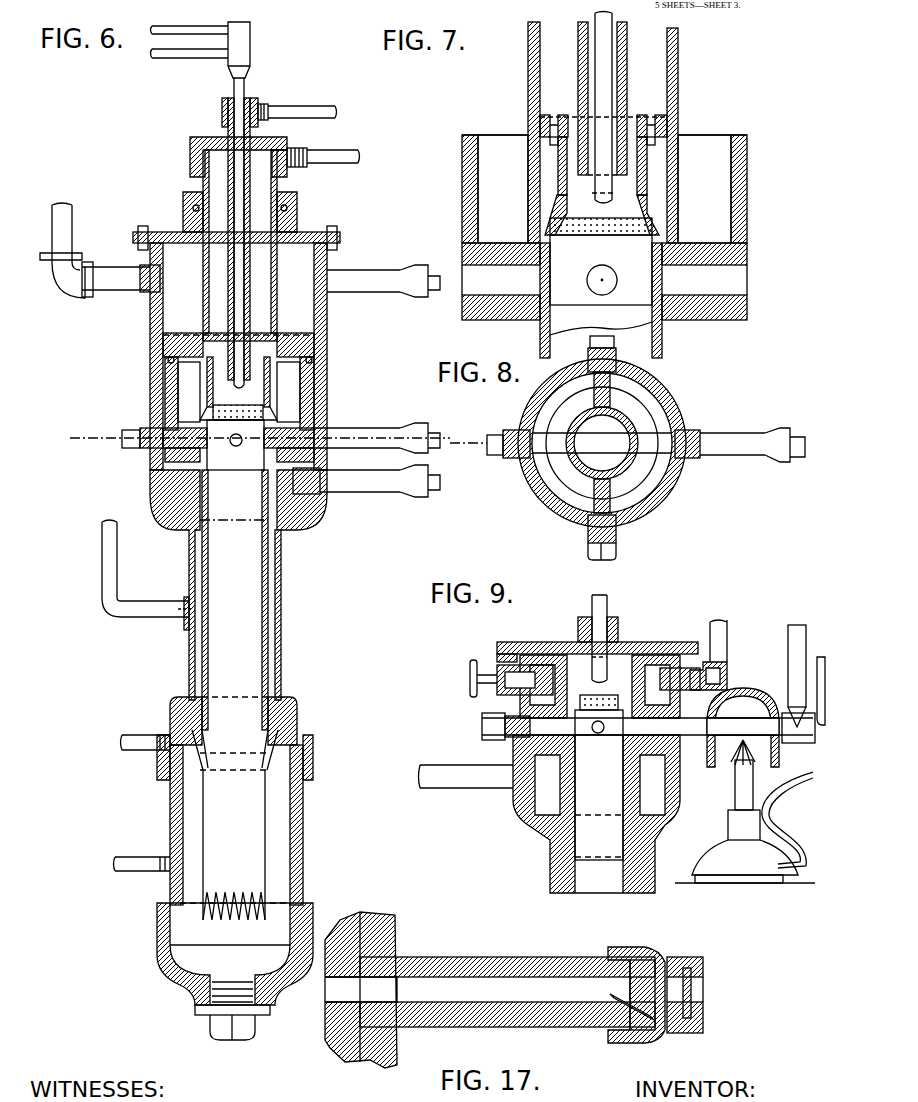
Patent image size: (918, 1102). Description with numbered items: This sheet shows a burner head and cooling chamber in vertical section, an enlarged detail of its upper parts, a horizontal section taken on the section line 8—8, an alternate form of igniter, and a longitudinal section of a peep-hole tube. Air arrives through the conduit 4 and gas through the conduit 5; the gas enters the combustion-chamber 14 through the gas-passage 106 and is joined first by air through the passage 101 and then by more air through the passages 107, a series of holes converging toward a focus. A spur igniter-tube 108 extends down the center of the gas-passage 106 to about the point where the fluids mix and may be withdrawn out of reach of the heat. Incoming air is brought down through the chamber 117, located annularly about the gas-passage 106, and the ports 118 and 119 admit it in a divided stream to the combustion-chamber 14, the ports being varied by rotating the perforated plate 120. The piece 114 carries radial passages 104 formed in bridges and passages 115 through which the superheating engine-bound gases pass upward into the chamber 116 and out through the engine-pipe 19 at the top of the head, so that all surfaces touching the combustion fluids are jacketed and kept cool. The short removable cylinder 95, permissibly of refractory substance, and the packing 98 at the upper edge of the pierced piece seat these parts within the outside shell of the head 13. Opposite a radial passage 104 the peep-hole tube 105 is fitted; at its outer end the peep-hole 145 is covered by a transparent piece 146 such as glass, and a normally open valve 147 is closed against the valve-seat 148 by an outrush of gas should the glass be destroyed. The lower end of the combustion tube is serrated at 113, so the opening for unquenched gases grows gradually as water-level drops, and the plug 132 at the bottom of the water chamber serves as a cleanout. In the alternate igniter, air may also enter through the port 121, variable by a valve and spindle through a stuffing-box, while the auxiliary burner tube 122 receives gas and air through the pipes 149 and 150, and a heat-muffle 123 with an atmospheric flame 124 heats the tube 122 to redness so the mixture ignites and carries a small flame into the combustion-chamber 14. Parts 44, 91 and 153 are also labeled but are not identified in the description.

In FIG. 6, the air conduit 4 is at (344, 157).
In FIG. 9, the air conduit 4 is at (708, 625).
In FIG. 6, the gas conduit 5 is at (314, 115).
In FIG. 9, the gas conduit 5 is at (590, 598).
In FIG. 6, the section line 8 is at (116, 438).
In FIG. 8, the section line 8 is at (490, 444).
In FIG. 17, the outside shell of the head 13 is at (393, 922).
In FIG. 6, the combustion-chamber 14 is at (252, 447).
In FIG. 9, the combustion-chamber 14 is at (612, 732).
In FIG. 6, the engine-pipe 19 is at (108, 292).
In FIG. 9, the engine-pipe 19 is at (487, 765).
In FIG. 6, the cylinder 44 is at (288, 388).
In FIG. 6, the pipe 91 is at (104, 563).
In FIG. 6, the removable cylinder 95 is at (155, 415).
In FIG. 7, the removable cylinder 95 is at (673, 257).
In FIG. 8, the removable cylinder 95 is at (637, 458).
In FIG. 6, the packing 98 is at (313, 357).
In FIG. 9, the air passage 101 is at (617, 645).
In FIG. 8, the radial passage 104 is at (550, 442).
In FIG. 6, the peep-hole tube 105 is at (378, 427).
In FIG. 17, the peep-hole tube 105 is at (483, 958).
In FIG. 6, the gas-passage 106 is at (229, 258).
In FIG. 6, the converging passages 107 is at (227, 422).
In FIG. 7, the converging passages 107 is at (598, 226).
In FIG. 6, the spur igniter-tube 108 is at (240, 189).
In FIG. 7, the spur igniter-tube 108 is at (607, 183).
In FIG. 6, the serrations 113 is at (263, 907).
In FIG. 6, the pierced piece 114 is at (313, 418).
In FIG. 7, the pierced piece 114 is at (742, 188).
In FIG. 8, the pierced piece 114 is at (663, 422).
In FIG. 8, the passages 115 is at (640, 408).
In FIG. 6, the chamber 116 is at (305, 273).
In FIG. 6, the air chamber 117 is at (217, 203).
In FIG. 6, the air port 118 is at (251, 355).
In FIG. 7, the air port 118 is at (633, 115).
In FIG. 6, the air port 119 is at (277, 333).
In FIG. 7, the air port 119 is at (655, 118).
In FIG. 6, the perforated plate 120 is at (213, 350).
In FIG. 7, the perforated plate 120 is at (572, 117).
In FIG. 9, the air port 121 is at (550, 695).
In FIG. 9, the auxiliary burner tube 122 is at (730, 737).
In FIG. 9, the heat-muffle 123 is at (742, 688).
In FIG. 9, the atmospheric flame 124 is at (748, 783).
In FIG. 6, the plug 132 is at (257, 1031).
In FIG. 17, the peep-hole 145 is at (702, 992).
In FIG. 17, the transparent piece 146 is at (700, 967).
In FIG. 17, the valve 147 is at (627, 1033).
In FIG. 17, the valve-seat 148 is at (648, 952).
In FIG. 9, the supply pipe 149 is at (820, 657).
In FIG. 9, the supply pipe 150 is at (788, 635).
In FIG. 6, the pipe 153 is at (352, 492).